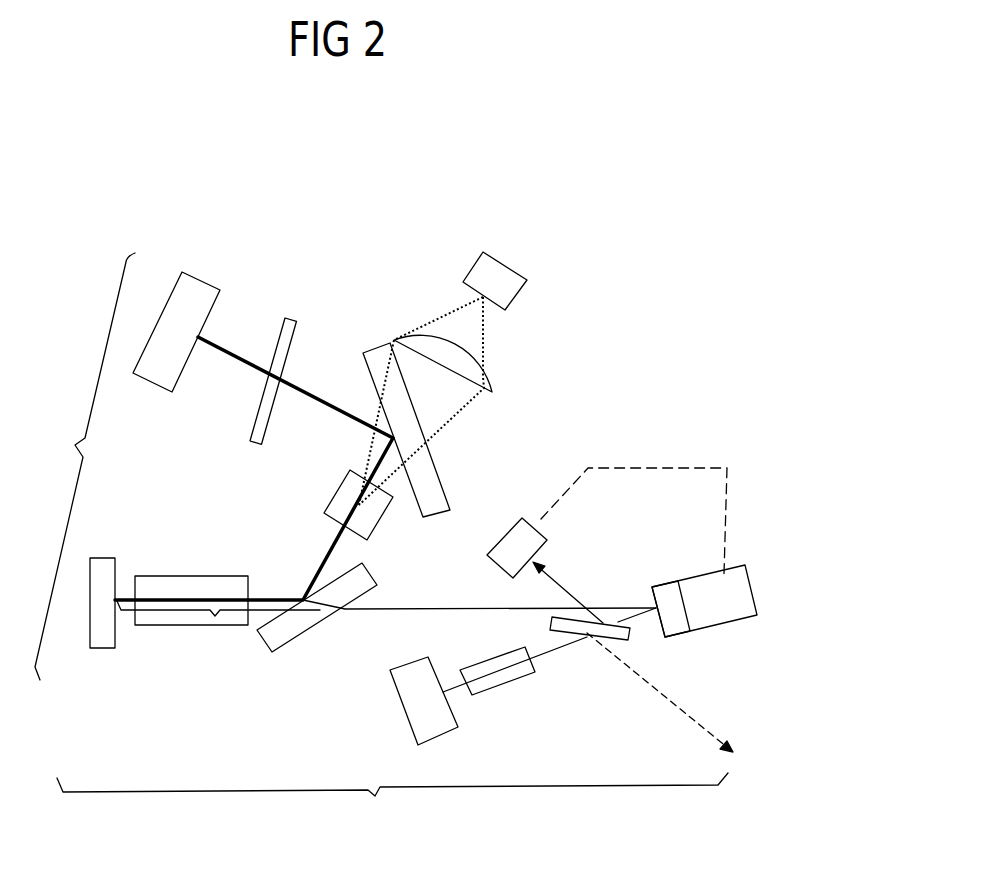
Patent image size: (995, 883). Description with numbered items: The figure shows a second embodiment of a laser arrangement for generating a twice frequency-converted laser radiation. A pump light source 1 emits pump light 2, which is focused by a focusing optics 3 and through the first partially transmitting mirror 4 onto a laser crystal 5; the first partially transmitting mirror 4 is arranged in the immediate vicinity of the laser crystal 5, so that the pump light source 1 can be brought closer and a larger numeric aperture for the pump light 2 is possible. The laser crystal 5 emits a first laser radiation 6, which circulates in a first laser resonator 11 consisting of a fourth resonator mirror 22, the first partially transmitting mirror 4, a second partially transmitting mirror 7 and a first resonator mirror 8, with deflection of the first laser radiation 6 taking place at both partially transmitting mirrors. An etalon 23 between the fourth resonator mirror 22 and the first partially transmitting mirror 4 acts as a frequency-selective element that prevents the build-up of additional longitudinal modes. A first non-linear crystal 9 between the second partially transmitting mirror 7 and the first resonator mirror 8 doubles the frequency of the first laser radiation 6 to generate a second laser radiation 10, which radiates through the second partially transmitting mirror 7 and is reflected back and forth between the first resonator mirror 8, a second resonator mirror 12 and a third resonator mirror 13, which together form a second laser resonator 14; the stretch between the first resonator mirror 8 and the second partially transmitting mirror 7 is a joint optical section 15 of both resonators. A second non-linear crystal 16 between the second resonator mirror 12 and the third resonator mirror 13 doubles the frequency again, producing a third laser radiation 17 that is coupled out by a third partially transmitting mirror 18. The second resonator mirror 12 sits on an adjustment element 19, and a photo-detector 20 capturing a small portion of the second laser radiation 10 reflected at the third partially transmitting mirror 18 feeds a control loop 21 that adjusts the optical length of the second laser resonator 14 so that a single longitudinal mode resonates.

The pump light source 1 is at (513, 275).
The pump light 2 is at (487, 335).
The focusing optics 3 is at (490, 387).
The first partially transmitting mirror 4 is at (440, 496).
The laser crystal 5 is at (351, 494).
The first laser radiation 6 is at (249, 360).
The second partially transmitting mirror 7 is at (275, 637).
The first resonator mirror 8 is at (97, 643).
The first non-linear crystal 9 is at (182, 618).
The second laser radiation 10 is at (268, 598).
The first laser resonator 11 is at (85, 466).
The second resonator mirror 12 is at (668, 595).
The third resonator mirror 13 is at (410, 707).
The second laser resonator 14 is at (392, 800).
The joint optical section 15 is at (216, 618).
The second non-linear crystal 16 is at (492, 690).
The third laser radiation 17 is at (675, 705).
The third partially transmitting mirror 18 is at (628, 632).
The adjustment element 19 is at (730, 597).
The photo-detector 20 is at (508, 547).
The control loop 21 is at (662, 463).
The fourth resonator mirror 22 is at (177, 297).
The etalon 23 is at (290, 323).